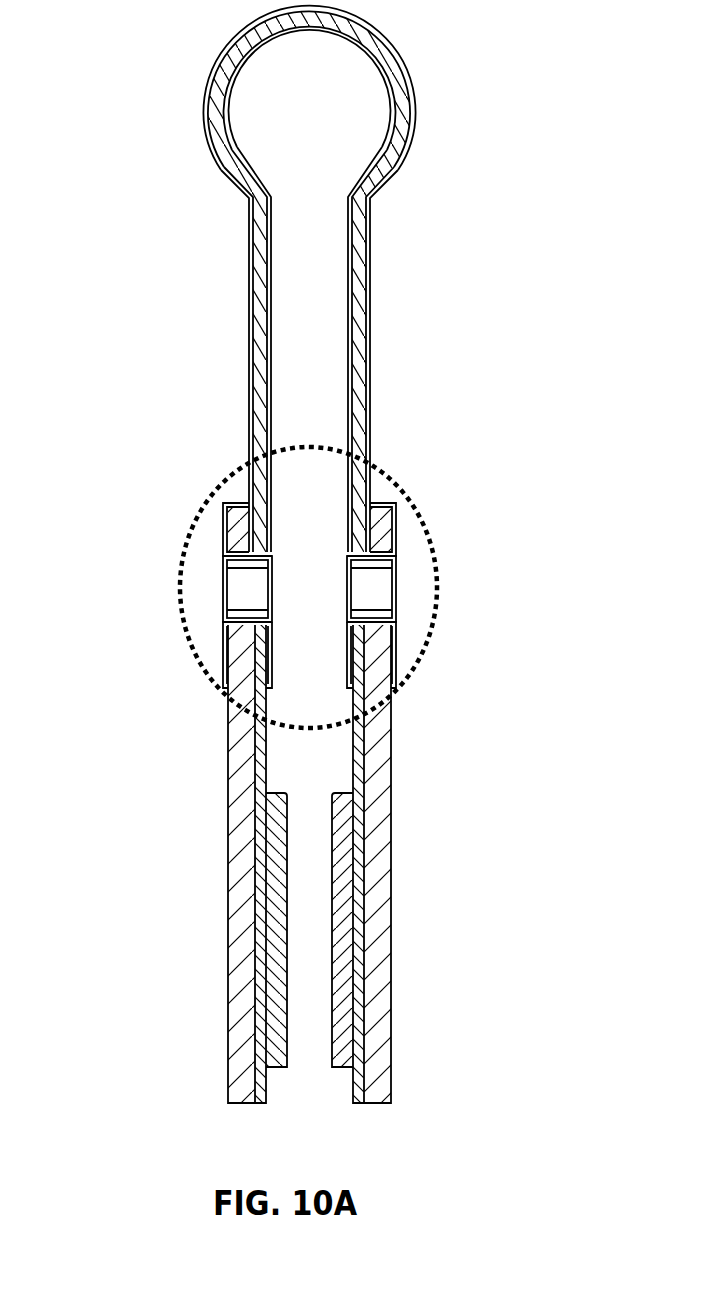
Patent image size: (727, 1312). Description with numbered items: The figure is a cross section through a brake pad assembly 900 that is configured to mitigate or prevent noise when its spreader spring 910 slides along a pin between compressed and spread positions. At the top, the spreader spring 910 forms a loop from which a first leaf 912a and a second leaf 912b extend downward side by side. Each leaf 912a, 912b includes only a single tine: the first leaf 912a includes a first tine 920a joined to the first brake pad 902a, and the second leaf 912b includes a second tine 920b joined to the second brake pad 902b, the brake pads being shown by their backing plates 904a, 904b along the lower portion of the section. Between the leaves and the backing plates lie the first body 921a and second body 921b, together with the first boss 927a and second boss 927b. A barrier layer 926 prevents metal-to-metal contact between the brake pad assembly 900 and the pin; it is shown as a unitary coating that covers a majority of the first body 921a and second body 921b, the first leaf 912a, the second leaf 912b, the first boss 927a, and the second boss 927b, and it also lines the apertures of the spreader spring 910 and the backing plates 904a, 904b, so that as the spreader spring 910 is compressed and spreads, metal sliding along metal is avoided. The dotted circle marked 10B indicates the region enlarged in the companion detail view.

The brake pad assembly 900 is at (462, 168).
The spreader spring 910 is at (207, 133).
The first leaf 912a is at (368, 240).
The second leaf 912b is at (263, 267).
The first body 921a is at (360, 522).
The second body 921b is at (262, 493).
The barrier layer 926 is at (227, 587).
The first boss 927a is at (378, 688).
The second boss 927b is at (248, 688).
The backing plate 904a is at (387, 898).
The backing plate 904b is at (227, 868).
The first tine 920a is at (358, 983).
The second tine 920b is at (257, 937).
The first brake pad 902a is at (398, 1108).
The second brake pad 902b is at (222, 1116).
The detail region shown in FIG. 10B is at (437, 575).